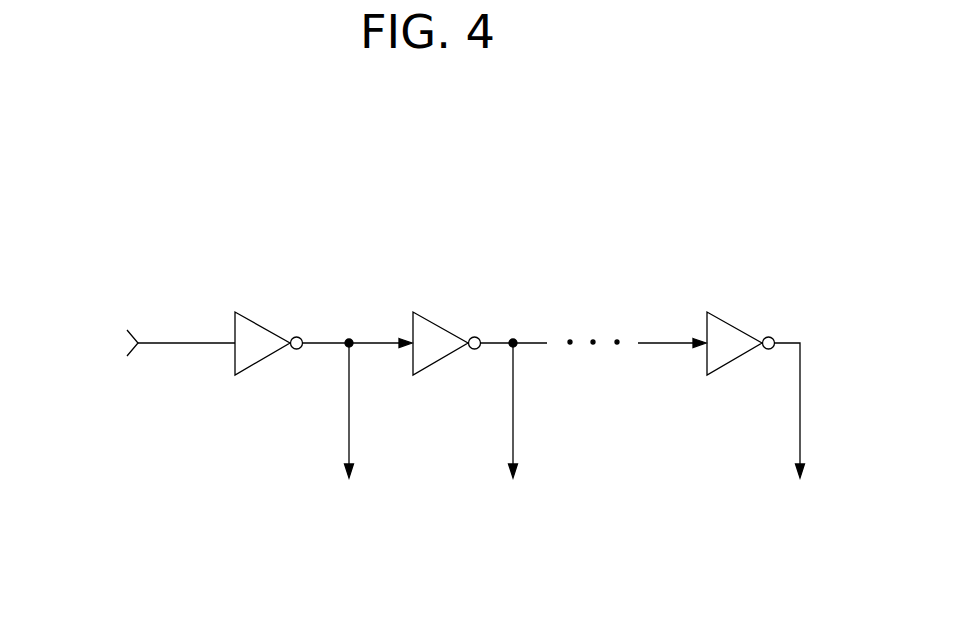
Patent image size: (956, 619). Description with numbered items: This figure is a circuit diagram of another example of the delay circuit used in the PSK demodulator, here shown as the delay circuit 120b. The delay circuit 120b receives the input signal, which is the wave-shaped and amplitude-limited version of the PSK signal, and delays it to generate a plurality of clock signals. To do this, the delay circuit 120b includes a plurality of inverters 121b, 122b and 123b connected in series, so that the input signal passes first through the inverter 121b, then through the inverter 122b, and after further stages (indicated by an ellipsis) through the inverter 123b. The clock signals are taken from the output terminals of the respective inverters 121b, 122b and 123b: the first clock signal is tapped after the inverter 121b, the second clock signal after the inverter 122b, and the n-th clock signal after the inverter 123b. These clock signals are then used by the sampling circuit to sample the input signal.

The delay circuit 120b is at (524, 166).
The inverter 121b is at (262, 323).
The inverter 122b is at (441, 323).
The inverter 123b is at (735, 323).